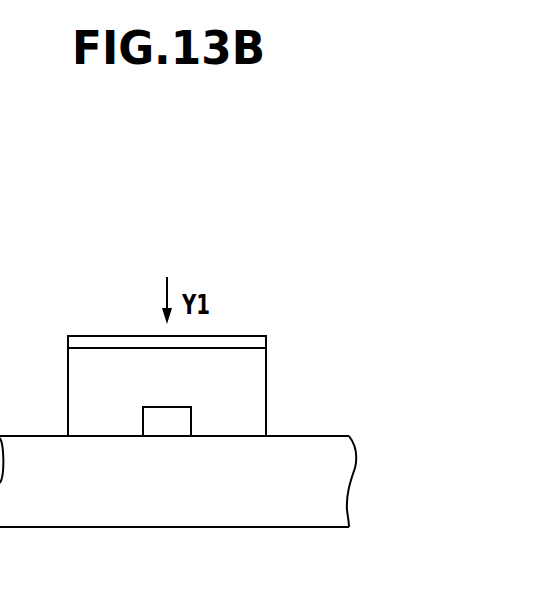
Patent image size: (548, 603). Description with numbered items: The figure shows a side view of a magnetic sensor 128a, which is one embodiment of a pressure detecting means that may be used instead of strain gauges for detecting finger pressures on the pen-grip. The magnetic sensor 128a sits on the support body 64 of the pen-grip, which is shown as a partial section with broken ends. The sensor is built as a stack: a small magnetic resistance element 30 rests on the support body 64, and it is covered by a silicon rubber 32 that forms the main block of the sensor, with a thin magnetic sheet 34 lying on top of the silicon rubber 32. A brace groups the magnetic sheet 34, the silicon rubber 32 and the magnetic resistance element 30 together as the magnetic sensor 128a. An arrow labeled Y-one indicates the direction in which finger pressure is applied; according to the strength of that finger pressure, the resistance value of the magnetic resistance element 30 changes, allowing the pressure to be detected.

The magnetic sensor 128a is at (255, 377).
The magnetic resistance element 30 is at (180, 422).
The silicon rubber 32 is at (258, 384).
The magnetic sheet 34 is at (258, 343).
The support body 64 is at (337, 485).